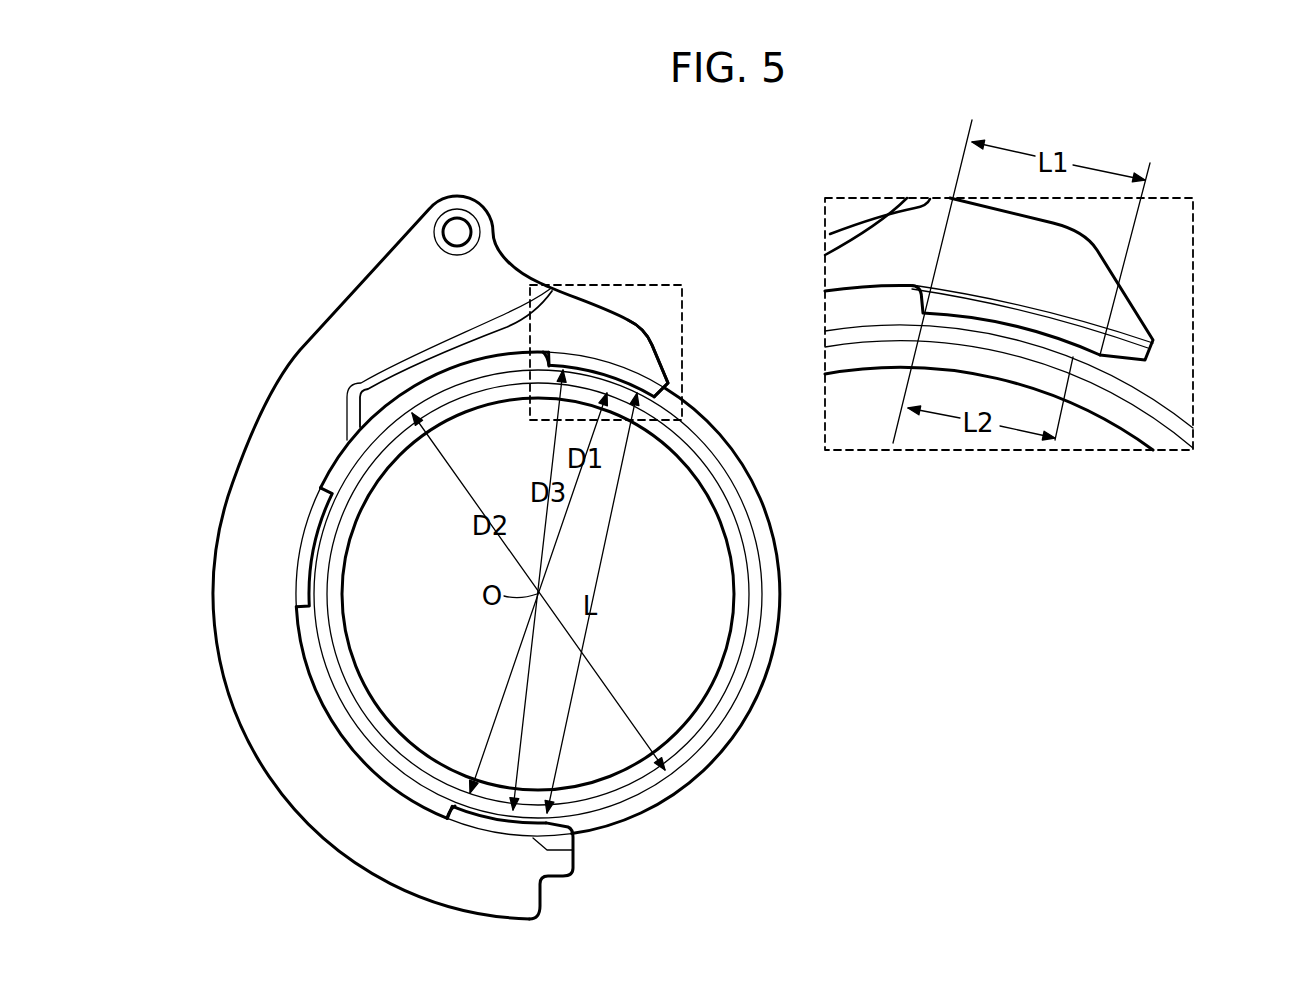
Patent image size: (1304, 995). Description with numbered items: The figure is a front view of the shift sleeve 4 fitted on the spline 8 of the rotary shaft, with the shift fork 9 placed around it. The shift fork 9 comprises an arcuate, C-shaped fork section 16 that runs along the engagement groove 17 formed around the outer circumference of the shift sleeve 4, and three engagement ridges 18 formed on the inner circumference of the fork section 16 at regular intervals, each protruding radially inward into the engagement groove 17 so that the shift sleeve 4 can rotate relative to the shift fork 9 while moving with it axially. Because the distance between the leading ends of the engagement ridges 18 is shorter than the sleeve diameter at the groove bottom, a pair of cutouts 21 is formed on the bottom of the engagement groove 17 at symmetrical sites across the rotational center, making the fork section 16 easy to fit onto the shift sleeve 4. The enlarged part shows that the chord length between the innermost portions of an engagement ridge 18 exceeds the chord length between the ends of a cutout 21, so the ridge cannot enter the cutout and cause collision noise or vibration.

The shift sleeve 4 is at (782, 552).
The spline 8 is at (842, 271).
The shift fork 9 is at (311, 326).
The fork section 16 is at (637, 343).
The engagement groove 17 is at (750, 676).
The engagement ridge 18 is at (607, 370).
The cutout 21 is at (588, 370).